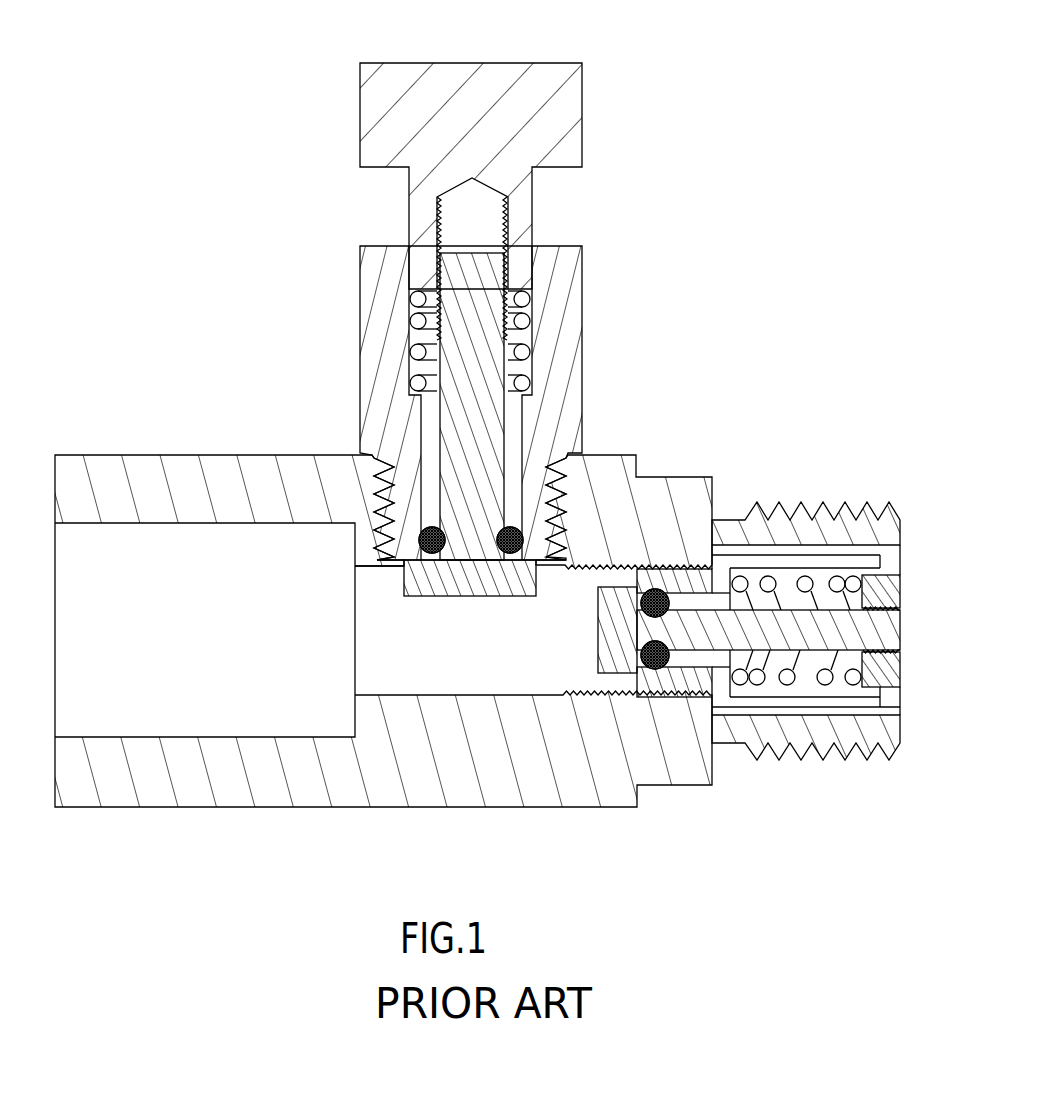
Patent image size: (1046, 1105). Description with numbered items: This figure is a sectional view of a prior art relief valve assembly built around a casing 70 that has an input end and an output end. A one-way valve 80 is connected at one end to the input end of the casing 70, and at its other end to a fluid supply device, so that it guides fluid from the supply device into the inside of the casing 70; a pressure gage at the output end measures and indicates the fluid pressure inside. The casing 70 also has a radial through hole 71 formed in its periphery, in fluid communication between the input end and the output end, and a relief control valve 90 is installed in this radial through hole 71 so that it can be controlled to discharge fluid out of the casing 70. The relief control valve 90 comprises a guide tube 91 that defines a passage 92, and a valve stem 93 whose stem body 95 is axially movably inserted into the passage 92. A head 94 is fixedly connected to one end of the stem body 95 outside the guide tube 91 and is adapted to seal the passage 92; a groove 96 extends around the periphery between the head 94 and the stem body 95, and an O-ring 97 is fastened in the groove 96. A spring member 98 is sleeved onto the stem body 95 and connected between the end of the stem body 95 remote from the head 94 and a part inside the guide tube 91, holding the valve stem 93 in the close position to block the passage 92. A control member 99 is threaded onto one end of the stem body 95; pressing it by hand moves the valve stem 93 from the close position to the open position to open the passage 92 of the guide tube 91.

The casing 70 is at (100, 432).
The radial through hole 71 is at (392, 577).
The one-way valve 80 is at (905, 592).
The relief control valve 90 is at (445, 329).
The guide tube 91 is at (548, 346).
The passage 92 is at (543, 315).
The valve stem 93 is at (579, 424).
The head 94 is at (540, 496).
The stem body 95 is at (465, 437).
The groove 96 is at (503, 543).
The O-ring 97 is at (422, 543).
The spring member 98 is at (519, 302).
The control member 99 is at (372, 113).